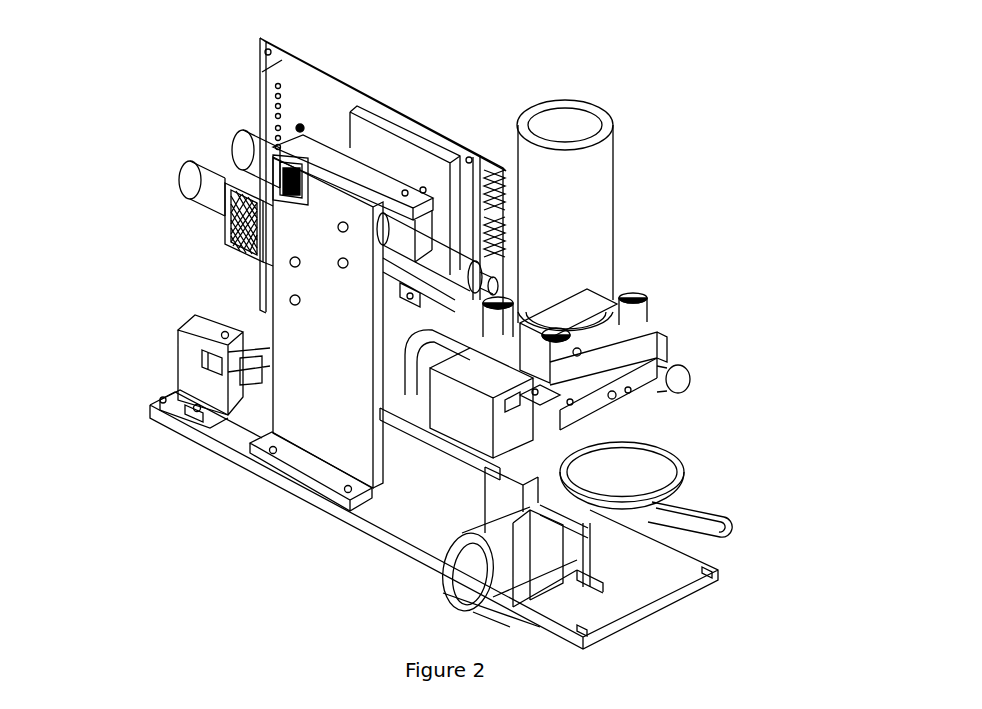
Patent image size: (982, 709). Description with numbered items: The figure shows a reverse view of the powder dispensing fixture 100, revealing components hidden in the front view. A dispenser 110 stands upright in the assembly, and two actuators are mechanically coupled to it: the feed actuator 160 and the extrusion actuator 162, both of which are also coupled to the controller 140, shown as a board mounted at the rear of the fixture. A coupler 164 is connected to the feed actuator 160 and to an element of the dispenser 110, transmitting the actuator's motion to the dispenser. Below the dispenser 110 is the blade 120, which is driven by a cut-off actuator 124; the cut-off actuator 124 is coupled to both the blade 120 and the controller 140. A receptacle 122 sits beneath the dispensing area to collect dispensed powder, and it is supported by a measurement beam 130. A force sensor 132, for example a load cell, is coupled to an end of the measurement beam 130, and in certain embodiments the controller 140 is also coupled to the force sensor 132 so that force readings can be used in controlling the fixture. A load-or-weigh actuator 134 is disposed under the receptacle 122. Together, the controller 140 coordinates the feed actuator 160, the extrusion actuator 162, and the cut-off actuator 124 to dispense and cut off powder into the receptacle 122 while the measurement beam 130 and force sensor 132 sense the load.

The powder dispensing fixture 100 is at (644, 55).
The dispenser 110 is at (605, 160).
The blade 120 is at (615, 402).
The receptacle 122 is at (660, 477).
The cut-off actuator 124 is at (465, 403).
The measurement beam 130 is at (548, 497).
The force sensor 132 is at (222, 365).
The load-or-weigh actuator 134 is at (530, 535).
The controller 140 is at (358, 94).
The feed actuator 160 is at (250, 145).
The extrusion actuator 162 is at (203, 187).
The coupler 164 is at (493, 280).